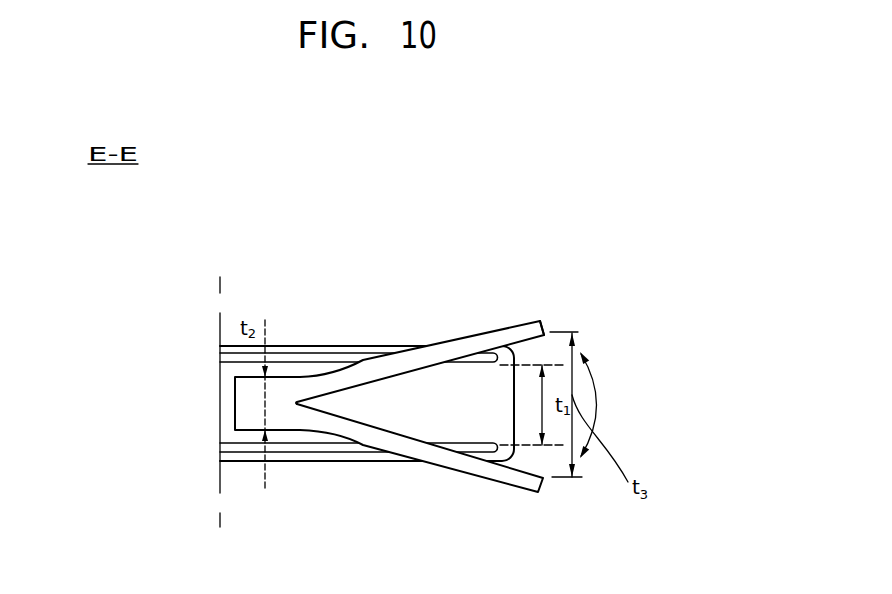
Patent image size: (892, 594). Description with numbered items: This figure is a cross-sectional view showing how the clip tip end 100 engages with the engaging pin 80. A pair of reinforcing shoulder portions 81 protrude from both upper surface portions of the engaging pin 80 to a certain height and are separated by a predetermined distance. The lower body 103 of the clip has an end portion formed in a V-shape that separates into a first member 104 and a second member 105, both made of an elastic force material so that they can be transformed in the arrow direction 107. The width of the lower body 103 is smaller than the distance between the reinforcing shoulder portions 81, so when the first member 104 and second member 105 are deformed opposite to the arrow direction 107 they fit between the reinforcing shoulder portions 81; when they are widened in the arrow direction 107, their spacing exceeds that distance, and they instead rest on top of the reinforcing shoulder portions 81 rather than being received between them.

The engaging pin 80 is at (304, 338).
The reinforcing shoulder portions 81 is at (357, 358).
The clip tip end 100 is at (560, 318).
The lower body 103 is at (240, 407).
The first member 104 is at (517, 332).
The second member 105 is at (520, 482).
The arrow direction 107 is at (598, 405).